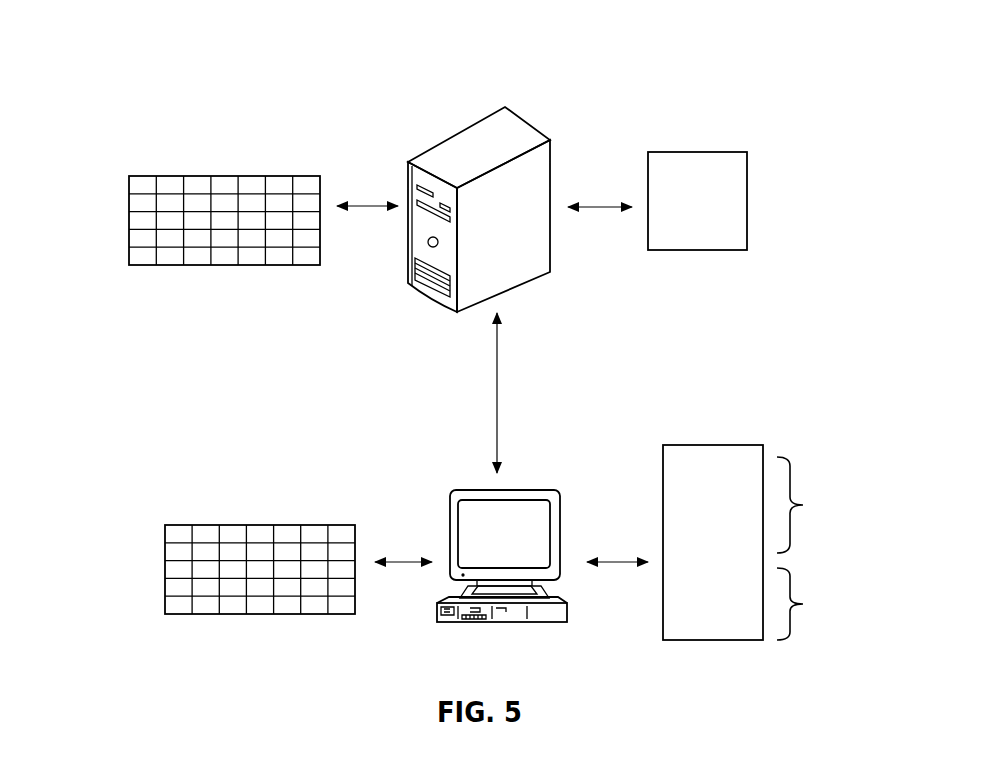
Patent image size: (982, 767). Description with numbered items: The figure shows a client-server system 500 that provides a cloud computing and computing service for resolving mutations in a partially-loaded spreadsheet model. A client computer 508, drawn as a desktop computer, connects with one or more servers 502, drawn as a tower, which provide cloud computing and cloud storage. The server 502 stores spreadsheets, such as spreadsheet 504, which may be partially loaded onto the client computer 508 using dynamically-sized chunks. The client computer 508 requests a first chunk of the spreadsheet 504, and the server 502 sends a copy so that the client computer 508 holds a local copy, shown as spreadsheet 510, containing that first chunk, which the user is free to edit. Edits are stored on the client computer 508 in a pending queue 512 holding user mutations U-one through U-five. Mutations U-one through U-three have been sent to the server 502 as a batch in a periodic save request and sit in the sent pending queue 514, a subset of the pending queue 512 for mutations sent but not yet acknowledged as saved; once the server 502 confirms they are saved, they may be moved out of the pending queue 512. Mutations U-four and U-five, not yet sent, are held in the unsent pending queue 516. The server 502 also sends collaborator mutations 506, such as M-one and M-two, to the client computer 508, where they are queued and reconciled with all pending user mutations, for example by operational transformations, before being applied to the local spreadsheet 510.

The client-server system 500 is at (130, 52).
The server 502 is at (465, 131).
The spreadsheet 504 is at (177, 176).
The collaborator mutations 506 is at (676, 152).
The client computer 508 is at (460, 490).
The local spreadsheet 510 is at (213, 525).
The pending queue 512 is at (700, 445).
The sent pending queue 514 is at (824, 505).
The unsent pending queue 516 is at (824, 604).